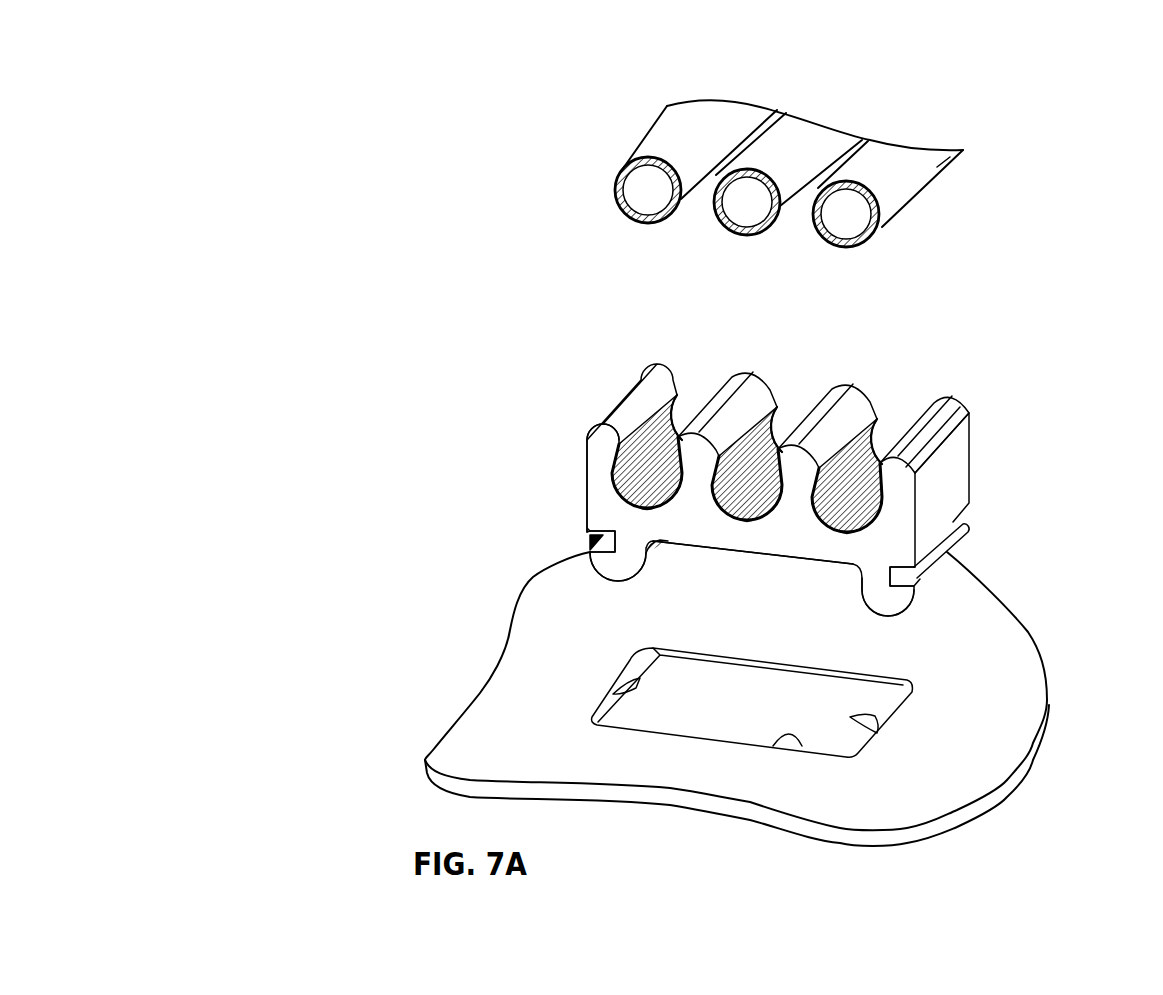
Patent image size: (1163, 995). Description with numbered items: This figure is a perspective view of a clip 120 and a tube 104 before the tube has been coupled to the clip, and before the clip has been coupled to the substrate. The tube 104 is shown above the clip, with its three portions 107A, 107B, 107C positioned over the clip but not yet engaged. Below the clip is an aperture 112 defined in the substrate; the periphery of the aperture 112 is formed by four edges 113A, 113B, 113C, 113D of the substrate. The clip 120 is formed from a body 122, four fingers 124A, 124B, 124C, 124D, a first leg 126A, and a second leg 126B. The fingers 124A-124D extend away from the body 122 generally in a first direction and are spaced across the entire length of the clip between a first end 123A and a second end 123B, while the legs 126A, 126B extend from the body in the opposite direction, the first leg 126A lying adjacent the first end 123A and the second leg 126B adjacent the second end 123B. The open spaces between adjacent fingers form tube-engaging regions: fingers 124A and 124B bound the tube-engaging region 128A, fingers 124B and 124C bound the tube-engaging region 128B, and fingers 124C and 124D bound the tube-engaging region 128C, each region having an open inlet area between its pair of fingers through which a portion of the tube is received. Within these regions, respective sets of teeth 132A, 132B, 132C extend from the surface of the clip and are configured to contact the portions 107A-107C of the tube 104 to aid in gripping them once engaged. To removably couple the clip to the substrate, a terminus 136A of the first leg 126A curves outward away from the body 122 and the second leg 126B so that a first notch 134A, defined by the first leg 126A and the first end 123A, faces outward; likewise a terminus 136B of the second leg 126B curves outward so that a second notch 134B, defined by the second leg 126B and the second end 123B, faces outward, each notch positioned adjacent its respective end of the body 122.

The tube 104 is at (462, 172).
The portion of the tube 107A is at (702, 110).
The portion of the tube 107B is at (807, 127).
The portion of the tube 107C is at (895, 147).
The aperture 112 is at (581, 709).
The edge of the substrate 113A is at (637, 685).
The edge of the substrate 113B is at (715, 663).
The edge of the substrate 113C is at (867, 717).
The edge of the substrate 113D is at (795, 745).
The clip 120 is at (375, 485).
The body 122 is at (627, 515).
The first end 123A is at (561, 420).
The second end 123B is at (992, 468).
The finger 124A is at (657, 367).
The finger 124B is at (750, 375).
The finger 124C is at (847, 390).
The finger 124D is at (947, 407).
The first leg 126A is at (627, 563).
The second leg 126B is at (898, 599).
The tube-engaging region 128A is at (694, 378).
The tube-engaging region 128B is at (792, 390).
The tube-engaging region 128C is at (892, 402).
The set of teeth 132A is at (665, 505).
The set of teeth 132B is at (762, 517).
The set of teeth 132C is at (855, 548).
The first notch 134A is at (577, 533).
The second notch 134B is at (922, 578).
The terminus of the first leg 136A is at (594, 569).
The terminus of the second leg 136B is at (902, 615).